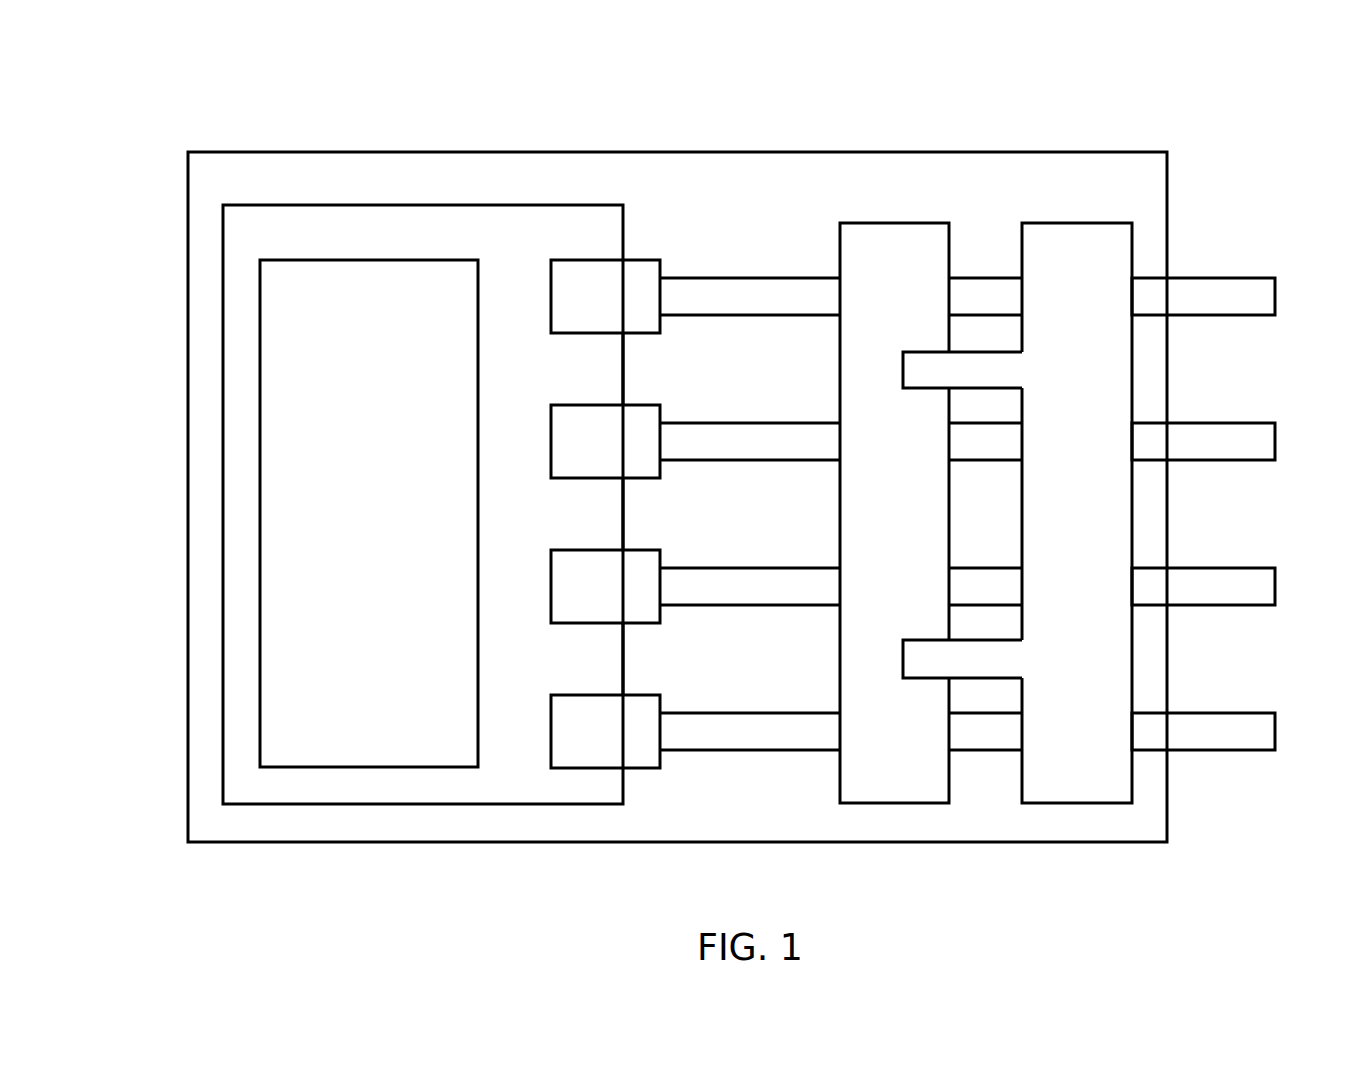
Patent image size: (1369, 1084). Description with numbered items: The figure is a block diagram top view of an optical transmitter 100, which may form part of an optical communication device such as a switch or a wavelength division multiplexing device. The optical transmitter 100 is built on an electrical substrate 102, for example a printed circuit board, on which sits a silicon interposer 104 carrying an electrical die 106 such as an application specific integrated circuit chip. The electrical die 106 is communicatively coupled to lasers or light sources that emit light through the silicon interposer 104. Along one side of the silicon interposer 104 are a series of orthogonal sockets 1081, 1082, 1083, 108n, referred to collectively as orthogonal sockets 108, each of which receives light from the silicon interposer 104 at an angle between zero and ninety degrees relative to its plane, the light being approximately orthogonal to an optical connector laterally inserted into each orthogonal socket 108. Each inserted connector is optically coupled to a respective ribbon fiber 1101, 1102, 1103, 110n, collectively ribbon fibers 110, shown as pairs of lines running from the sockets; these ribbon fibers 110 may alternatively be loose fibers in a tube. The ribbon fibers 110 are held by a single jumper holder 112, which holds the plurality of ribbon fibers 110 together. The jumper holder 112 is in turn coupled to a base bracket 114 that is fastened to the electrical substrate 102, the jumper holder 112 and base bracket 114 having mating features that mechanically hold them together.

The optical transmitter 100 is at (115, 69).
The electrical substrate 102 is at (697, 186).
The silicon interposer 104 is at (444, 241).
The electrical die 106 is at (388, 539).
The orthogonal socket 108 is at (695, 514).
The orthogonal socket 1081 is at (630, 320).
The orthogonal socket 1082 is at (630, 465).
The orthogonal socket 1083 is at (630, 610).
The orthogonal socket 108n is at (630, 755).
The ribbon fiber 110 is at (1237, 499).
The ribbon fiber 1101 is at (1248, 277).
The ribbon fiber 1102 is at (1248, 422).
The ribbon fiber 1103 is at (1248, 567).
The ribbon fiber 110n is at (1248, 712).
The jumper holder 112 is at (1095, 256).
The base bracket 114 is at (914, 257).